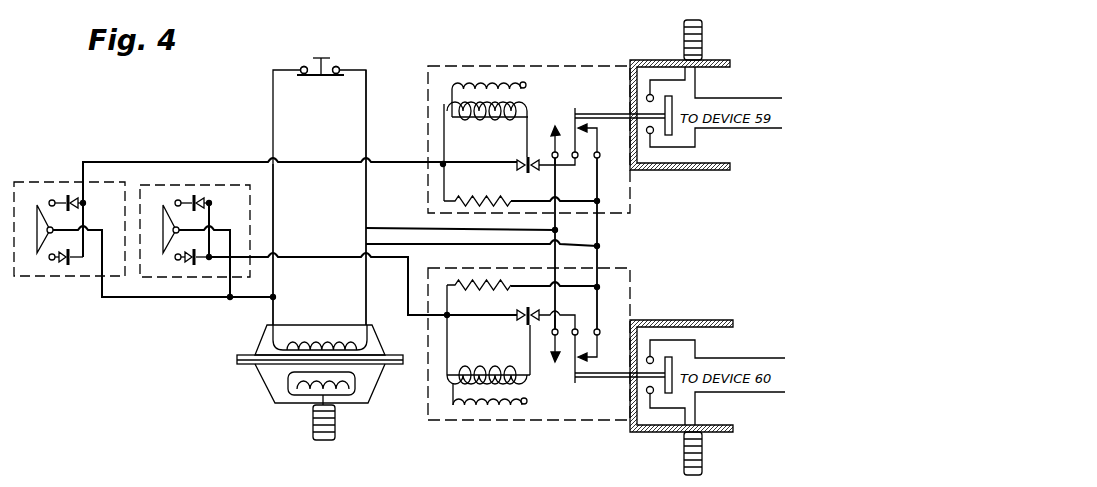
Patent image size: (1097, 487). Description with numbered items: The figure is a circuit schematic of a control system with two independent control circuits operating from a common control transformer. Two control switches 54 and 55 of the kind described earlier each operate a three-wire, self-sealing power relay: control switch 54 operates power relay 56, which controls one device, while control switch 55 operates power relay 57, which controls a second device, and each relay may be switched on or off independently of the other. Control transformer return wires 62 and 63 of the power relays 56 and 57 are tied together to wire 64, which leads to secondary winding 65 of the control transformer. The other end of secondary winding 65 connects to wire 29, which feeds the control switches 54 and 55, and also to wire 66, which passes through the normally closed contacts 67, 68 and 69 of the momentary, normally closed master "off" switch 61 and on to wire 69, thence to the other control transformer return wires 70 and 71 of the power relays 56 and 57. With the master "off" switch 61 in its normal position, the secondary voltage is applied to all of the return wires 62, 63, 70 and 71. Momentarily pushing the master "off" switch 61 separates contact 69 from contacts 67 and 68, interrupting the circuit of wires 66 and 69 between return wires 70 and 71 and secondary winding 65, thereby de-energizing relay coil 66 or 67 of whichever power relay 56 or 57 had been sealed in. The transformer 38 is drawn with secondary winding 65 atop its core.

The wire 29 is at (240, 302).
The transformer 38 is at (255, 347).
The control switch 54 is at (38, 182).
The control switch 55 is at (182, 185).
The power relay 56 is at (562, 46).
The power relay 57 is at (552, 425).
The master "off" switch 61 is at (327, 21).
The control transformer return wire 62 is at (600, 210).
The control transformer return wire 63 is at (600, 284).
The wire 64 is at (367, 279).
The secondary winding 65 is at (313, 338).
The wire 66 is at (276, 233).
The normally closed contact 67 is at (300, 68).
The normally closed contact 68 is at (340, 68).
The contact and wire 69 is at (324, 77).
The control transformer return wire 70 is at (558, 224).
The control transformer return wire 71 is at (558, 262).